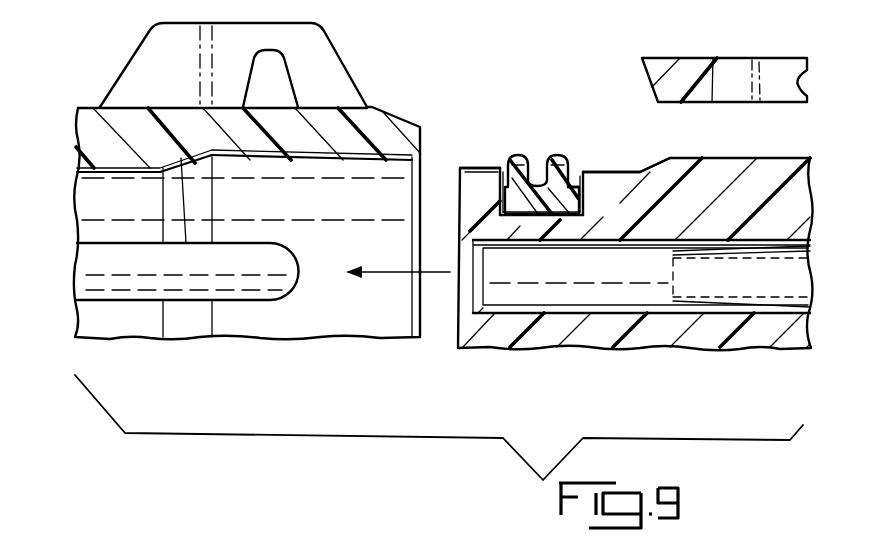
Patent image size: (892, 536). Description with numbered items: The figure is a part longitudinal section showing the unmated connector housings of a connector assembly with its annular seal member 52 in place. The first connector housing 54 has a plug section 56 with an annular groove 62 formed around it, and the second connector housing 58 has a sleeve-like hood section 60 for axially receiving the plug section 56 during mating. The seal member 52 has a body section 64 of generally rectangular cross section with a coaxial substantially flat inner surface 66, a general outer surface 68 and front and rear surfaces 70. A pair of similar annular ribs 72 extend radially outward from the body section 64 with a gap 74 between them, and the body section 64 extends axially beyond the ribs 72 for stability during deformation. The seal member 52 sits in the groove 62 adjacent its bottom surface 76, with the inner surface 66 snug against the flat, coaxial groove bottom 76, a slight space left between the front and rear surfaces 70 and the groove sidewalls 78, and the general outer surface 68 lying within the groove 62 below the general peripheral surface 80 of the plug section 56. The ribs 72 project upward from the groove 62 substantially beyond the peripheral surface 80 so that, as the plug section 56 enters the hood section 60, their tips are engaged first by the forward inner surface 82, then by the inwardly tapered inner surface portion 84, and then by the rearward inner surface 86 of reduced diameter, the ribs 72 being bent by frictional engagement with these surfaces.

The annular seal member 52 is at (563, 176).
The first connector housing 54 is at (816, 176).
The plug section 56 is at (628, 356).
The second connector housing 58 is at (72, 112).
The hood section 60 is at (177, 107).
The annular groove 62 is at (502, 173).
The body section 64 is at (538, 218).
The inner surface 66 is at (577, 218).
The general outer surface 68 is at (583, 186).
The front and rear surfaces 70 is at (498, 206).
The annular ribs 72 is at (540, 172).
The gap 74 is at (567, 168).
The bottom surface 76 is at (517, 218).
The groove sidewalls 78 is at (497, 174).
The general peripheral surface 80 is at (632, 179).
The forward inner surface 82 is at (312, 172).
The inwardly tapered inner surface portion 84 is at (188, 271).
The rearward inner surface 86 is at (122, 172).